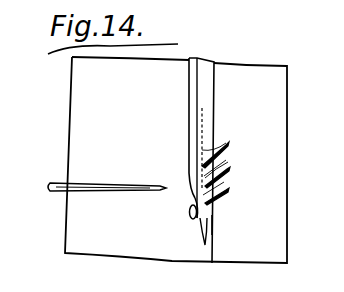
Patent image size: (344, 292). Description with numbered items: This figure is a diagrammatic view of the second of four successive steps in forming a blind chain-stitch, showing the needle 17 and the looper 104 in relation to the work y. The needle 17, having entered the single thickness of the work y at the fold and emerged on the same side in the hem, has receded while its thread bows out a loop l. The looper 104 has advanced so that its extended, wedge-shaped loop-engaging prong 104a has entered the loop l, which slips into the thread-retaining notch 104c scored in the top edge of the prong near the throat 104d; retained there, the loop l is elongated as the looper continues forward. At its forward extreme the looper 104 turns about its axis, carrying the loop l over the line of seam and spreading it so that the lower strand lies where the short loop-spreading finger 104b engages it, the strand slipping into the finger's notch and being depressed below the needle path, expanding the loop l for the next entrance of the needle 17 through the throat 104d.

The looper 104 is at (192, 84).
The loop-engaging prong 104a is at (203, 226).
The loop-spreading finger 104b is at (188, 217).
The thread-retaining notch 104c is at (262, 233).
The needle receiving and guiding groove or throat 104d is at (189, 208).
The needle 17 is at (97, 182).
The work y is at (72, 226).
The loop l is at (216, 166).